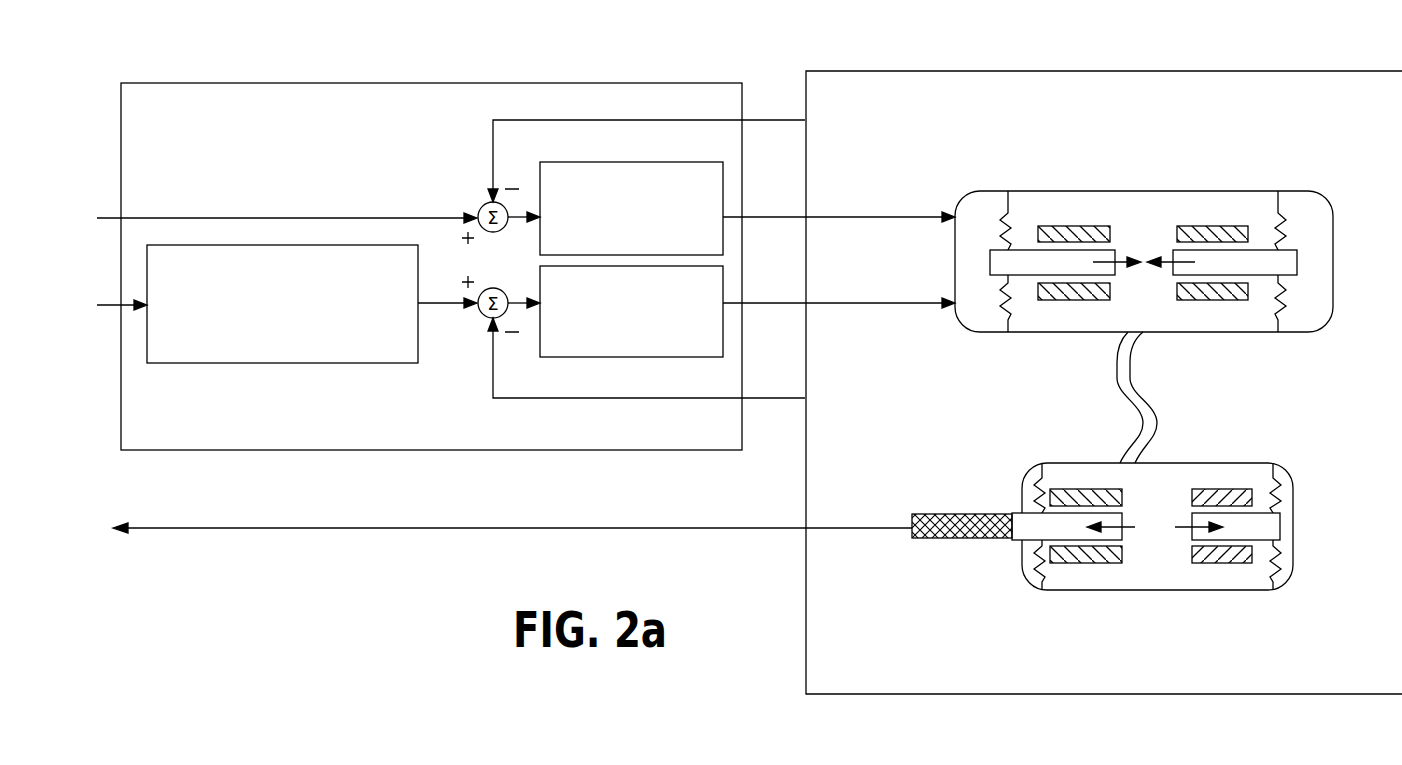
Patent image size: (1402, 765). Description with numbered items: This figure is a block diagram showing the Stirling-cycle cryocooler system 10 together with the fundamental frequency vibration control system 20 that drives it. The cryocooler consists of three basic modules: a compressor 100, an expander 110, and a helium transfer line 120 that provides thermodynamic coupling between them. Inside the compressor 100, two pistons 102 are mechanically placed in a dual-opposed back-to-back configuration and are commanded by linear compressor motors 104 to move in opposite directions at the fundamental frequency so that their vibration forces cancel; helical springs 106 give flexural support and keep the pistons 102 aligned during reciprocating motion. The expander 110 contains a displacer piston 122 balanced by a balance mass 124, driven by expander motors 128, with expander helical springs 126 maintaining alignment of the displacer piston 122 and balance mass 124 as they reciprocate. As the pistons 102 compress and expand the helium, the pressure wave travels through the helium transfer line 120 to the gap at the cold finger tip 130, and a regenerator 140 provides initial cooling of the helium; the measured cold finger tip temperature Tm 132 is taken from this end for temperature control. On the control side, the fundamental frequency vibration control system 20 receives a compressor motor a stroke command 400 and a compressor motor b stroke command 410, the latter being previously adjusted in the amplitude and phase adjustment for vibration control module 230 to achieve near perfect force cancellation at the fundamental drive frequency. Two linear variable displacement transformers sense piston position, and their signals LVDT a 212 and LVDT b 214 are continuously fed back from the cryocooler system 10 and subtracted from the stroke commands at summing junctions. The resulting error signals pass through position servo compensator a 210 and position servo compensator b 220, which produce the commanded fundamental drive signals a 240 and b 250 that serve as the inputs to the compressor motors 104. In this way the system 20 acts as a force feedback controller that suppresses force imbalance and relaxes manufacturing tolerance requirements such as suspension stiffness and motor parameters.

The Stirling-cycle cryocooler system 10 is at (1340, 71).
The fundamental frequency vibration control system 20 is at (742, 80).
The compressor 100 is at (1262, 191).
The pistons 102 is at (1208, 275).
The linear compressor motors 104 is at (1215, 228).
The helical springs 106 is at (1007, 293).
The expander 110 is at (1215, 590).
The helium transfer line 120 is at (1130, 425).
The displacer piston 122 is at (1122, 541).
The balance mass 124 is at (1295, 550).
The expander helical springs 126 is at (1040, 552).
The expander motors 128 is at (1090, 563).
The cold finger tip 130 is at (912, 542).
The measured temperature Tm 132 is at (405, 528).
The regenerator 140 is at (975, 514).
The position servo compensator a 210 is at (635, 162).
The LVDT a signal 212 is at (520, 120).
The LVDT b signal 214 is at (518, 398).
The position servo compensator b 220 is at (630, 357).
The amplitude and phase adjustment for vibration control module 230 is at (370, 363).
The commanded fundamental drive signal a 240 is at (839, 200).
The commanded fundamental drive signal b 250 is at (742, 300).
The compressor motor a stroke command 400 is at (110, 217).
The compressor motor b stroke command 410 is at (111, 303).